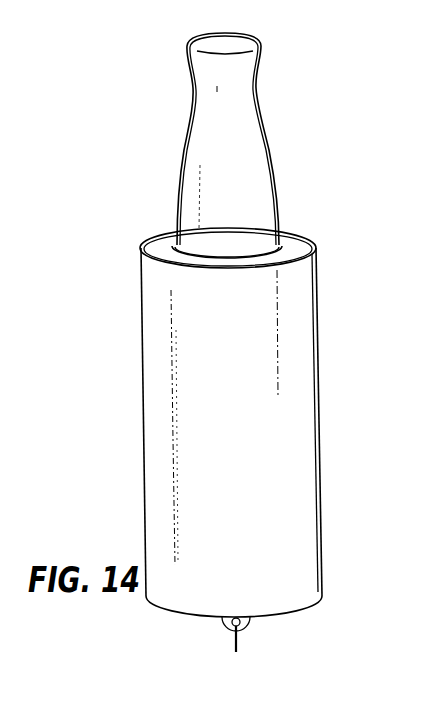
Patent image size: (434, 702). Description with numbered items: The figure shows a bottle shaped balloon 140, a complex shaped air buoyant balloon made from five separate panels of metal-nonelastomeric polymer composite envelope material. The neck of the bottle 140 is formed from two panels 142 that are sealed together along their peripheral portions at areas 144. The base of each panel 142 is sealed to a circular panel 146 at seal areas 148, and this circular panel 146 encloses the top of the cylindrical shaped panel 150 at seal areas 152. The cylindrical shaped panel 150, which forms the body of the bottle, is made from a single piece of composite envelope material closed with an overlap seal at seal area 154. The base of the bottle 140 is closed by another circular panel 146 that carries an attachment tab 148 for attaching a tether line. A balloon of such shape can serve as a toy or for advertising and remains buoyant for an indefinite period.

The bottle shaped balloon 140 is at (328, 316).
The neck panel 142 is at (217, 85).
The seal area of neck panels 144 is at (257, 93).
The circular panel 146 is at (159, 249).
The seal area / attachment tab 148 is at (283, 244).
The cylindrical shaped panel 150 is at (207, 437).
The seal area of circular panel 152 is at (315, 243).
The overlap seal area 154 is at (316, 387).